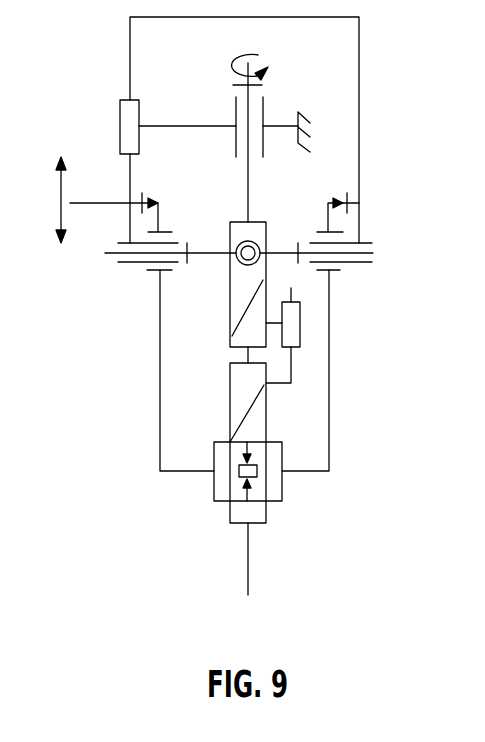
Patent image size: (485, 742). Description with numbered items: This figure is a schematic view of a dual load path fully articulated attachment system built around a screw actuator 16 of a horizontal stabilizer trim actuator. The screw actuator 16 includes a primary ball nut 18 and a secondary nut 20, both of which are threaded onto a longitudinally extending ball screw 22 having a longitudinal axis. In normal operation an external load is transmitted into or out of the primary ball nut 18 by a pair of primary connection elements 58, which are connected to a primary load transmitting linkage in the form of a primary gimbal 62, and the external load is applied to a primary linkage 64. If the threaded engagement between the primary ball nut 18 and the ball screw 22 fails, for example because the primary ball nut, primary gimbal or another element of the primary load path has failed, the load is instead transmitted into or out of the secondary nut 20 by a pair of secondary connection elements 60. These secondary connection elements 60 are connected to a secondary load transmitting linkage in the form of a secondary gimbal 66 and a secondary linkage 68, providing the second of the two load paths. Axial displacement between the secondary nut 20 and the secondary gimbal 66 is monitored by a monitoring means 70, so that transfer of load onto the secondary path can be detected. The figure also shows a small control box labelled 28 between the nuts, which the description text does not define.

The screw actuator 16 is at (207, 361).
The primary ball nut 18 is at (233, 335).
The secondary nut 20 is at (244, 417).
The ball screw 22 is at (249, 558).
The control unit 28 is at (292, 323).
The primary connection elements 58 is at (258, 258).
The secondary connection elements 60 is at (257, 472).
The primary gimbal 62 is at (278, 250).
The primary linkage 64 is at (130, 60).
The secondary gimbal 66 is at (214, 490).
The secondary linkage 68 is at (160, 428).
The monitoring means 70 is at (244, 446).